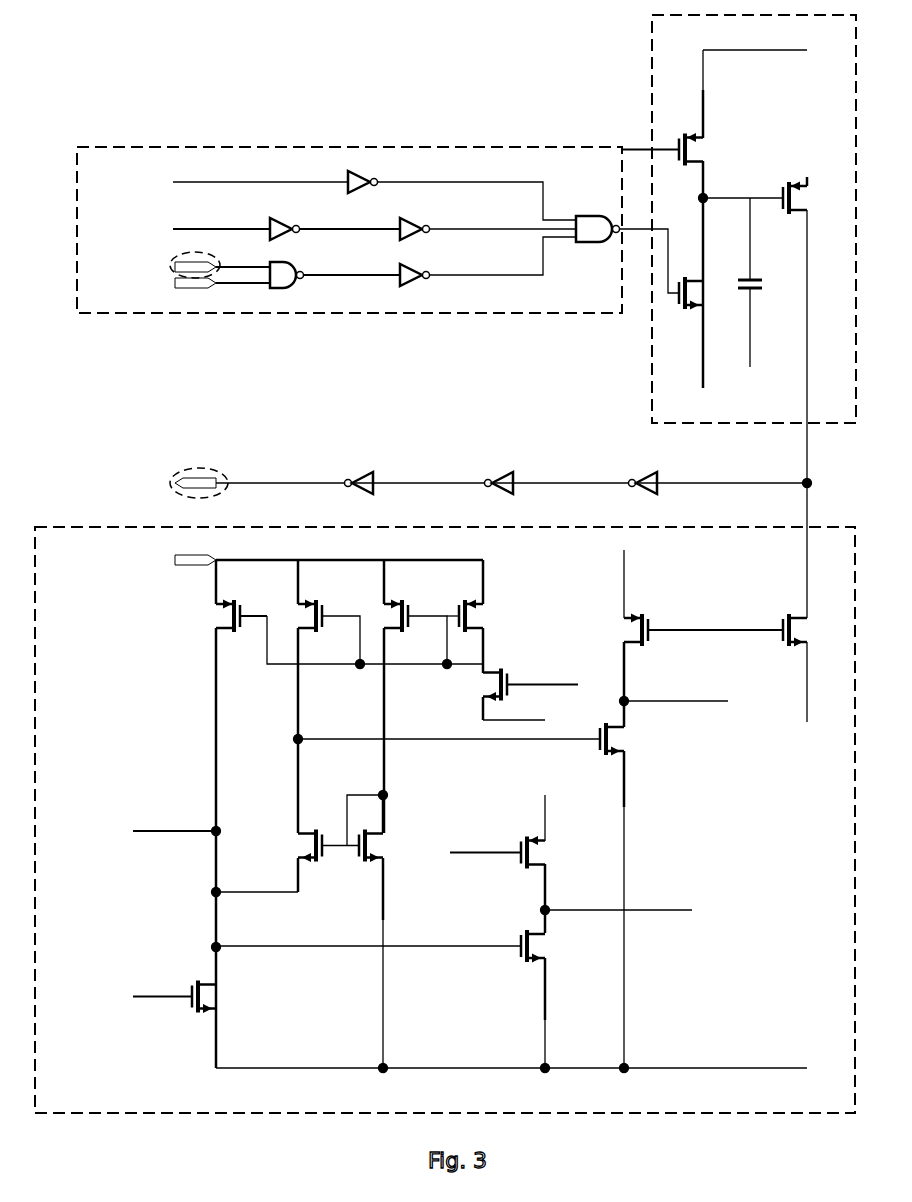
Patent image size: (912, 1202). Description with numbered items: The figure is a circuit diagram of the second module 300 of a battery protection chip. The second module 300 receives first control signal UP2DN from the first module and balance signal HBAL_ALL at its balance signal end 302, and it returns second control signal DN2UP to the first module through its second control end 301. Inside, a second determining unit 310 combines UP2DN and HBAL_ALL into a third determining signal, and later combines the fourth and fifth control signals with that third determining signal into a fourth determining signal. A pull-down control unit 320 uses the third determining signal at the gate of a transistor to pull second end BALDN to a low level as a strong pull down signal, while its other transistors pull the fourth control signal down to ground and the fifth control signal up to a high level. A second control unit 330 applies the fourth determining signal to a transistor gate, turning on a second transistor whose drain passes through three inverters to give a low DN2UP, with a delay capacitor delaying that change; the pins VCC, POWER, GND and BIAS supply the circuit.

The second module 300 is at (391, 84).
The second control end 301 is at (202, 480).
The balance signal end 302 is at (197, 263).
The second determining unit 310 is at (349, 230).
The pull-down control unit 320 is at (445, 820).
The second control unit 330 is at (739, 219).